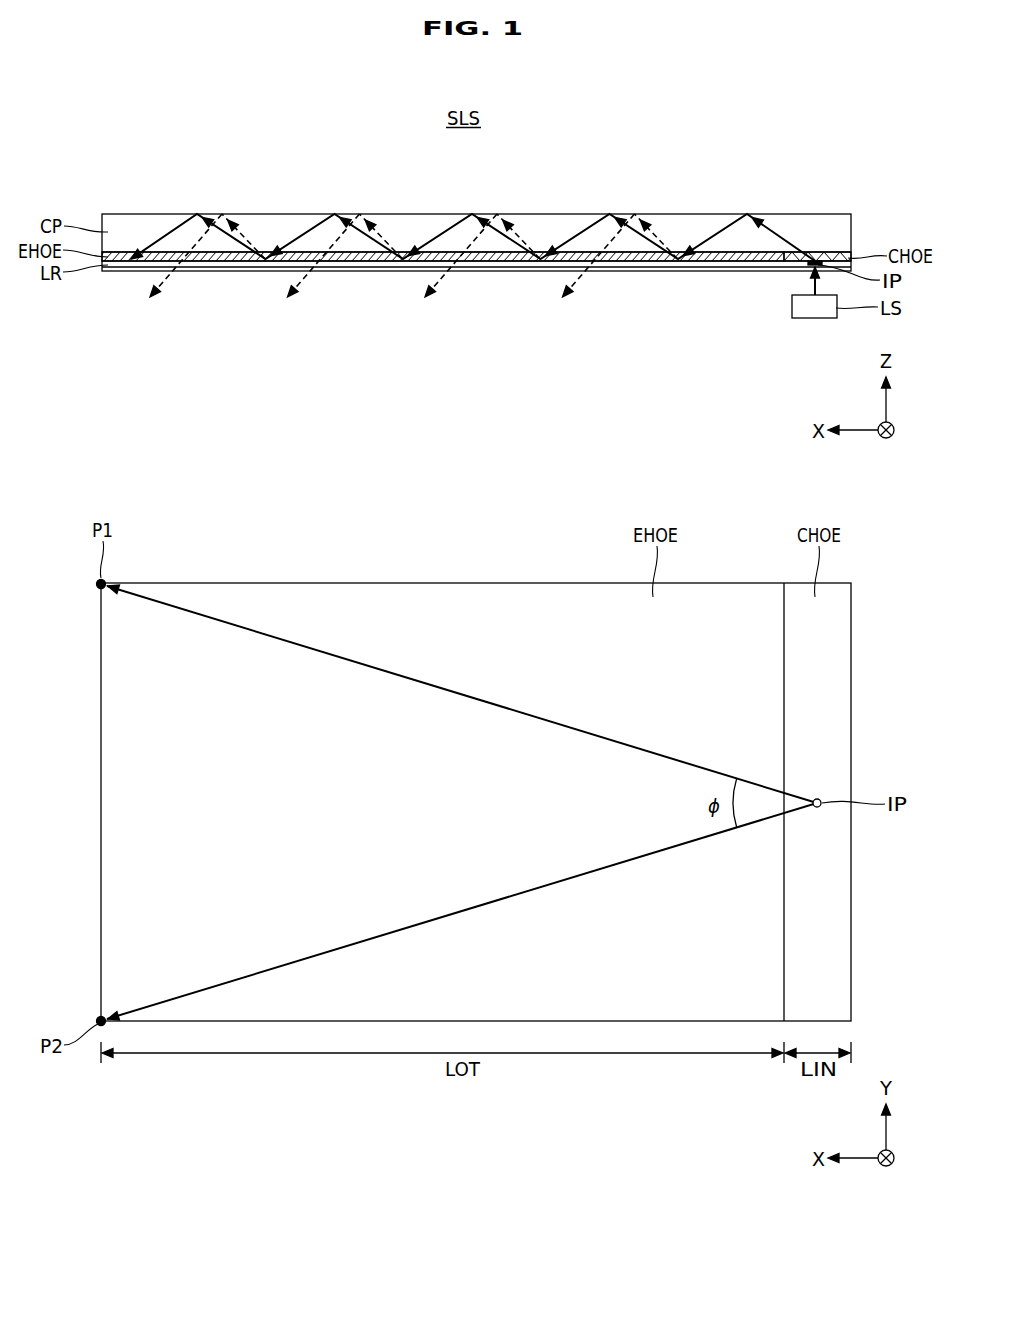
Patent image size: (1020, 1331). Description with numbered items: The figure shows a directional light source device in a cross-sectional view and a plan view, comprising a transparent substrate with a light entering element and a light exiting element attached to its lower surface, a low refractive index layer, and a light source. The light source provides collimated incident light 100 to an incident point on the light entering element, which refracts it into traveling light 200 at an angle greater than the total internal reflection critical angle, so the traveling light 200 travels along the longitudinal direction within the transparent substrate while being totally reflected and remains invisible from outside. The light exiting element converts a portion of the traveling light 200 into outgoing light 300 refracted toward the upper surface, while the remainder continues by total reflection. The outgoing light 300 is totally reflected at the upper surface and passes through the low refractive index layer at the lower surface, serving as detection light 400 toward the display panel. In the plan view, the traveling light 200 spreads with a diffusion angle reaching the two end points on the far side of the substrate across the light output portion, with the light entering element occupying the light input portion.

The incident light 100 is at (813, 283).
The traveling light 200 is at (717, 232).
The outgoing light 300 is at (653, 232).
The detection light 400 is at (581, 280).